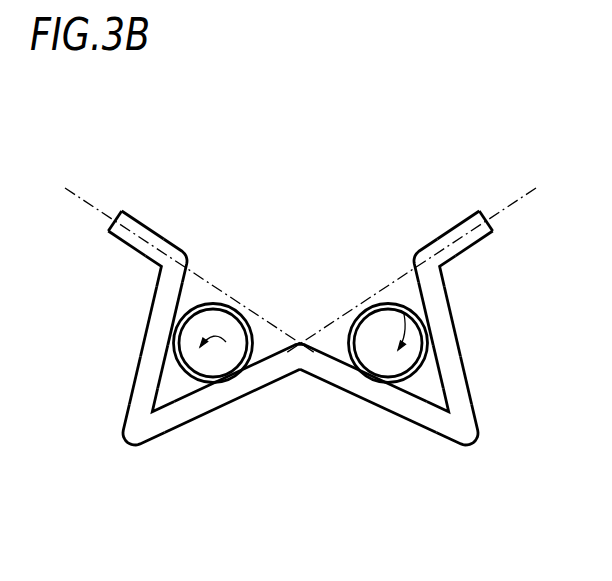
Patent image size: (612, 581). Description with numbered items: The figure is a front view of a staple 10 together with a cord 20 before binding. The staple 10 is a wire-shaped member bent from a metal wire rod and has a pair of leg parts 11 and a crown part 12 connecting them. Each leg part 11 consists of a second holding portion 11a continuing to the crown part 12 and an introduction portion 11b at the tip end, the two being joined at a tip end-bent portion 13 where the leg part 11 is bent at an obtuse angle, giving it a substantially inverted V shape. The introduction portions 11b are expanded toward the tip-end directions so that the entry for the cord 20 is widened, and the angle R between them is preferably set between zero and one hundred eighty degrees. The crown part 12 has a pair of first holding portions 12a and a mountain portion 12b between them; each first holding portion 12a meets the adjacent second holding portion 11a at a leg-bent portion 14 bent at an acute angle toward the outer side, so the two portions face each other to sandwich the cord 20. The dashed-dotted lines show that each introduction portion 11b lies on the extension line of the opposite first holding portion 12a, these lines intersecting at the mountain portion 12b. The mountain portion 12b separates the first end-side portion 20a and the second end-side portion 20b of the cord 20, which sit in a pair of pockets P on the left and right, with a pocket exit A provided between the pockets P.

The staple 10 is at (483, 412).
The leg part 11 is at (133, 369).
The second holding portion 11a is at (150, 310).
The introduction portion 11b is at (147, 212).
The crown part 12 is at (237, 399).
The first holding portion 12a is at (282, 380).
The mountain portion 12b is at (350, 392).
The tip end-bent portion 13 is at (190, 259).
The leg-bent portion 14 is at (140, 447).
The cord 20 is at (235, 306).
The first end-side portion 20a is at (178, 374).
The second end-side portion 20b is at (410, 386).
The pocket exit A is at (320, 222).
The pocket P is at (222, 382).
The angle between the pair of introduction portions R is at (300, 270).